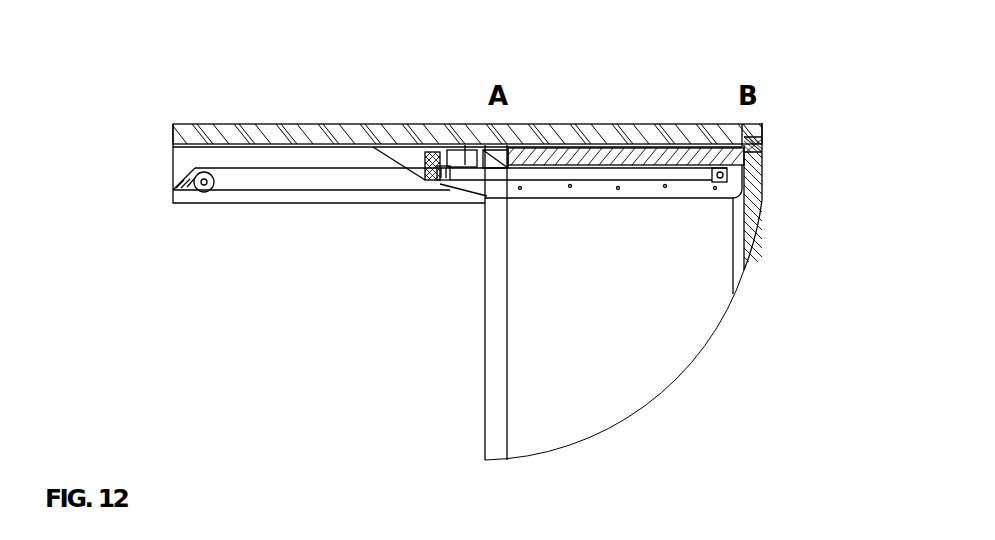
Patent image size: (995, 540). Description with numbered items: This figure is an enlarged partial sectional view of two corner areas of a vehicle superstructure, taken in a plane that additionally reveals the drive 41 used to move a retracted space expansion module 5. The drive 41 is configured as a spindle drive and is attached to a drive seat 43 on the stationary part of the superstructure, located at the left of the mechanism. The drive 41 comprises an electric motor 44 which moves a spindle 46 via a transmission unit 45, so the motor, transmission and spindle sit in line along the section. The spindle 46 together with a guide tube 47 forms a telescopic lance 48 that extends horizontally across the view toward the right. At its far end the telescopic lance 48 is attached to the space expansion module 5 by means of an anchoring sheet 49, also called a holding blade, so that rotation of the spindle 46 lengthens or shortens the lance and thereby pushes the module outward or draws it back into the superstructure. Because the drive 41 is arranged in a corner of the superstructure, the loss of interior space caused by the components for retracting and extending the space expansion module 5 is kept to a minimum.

The space expansion module 5 is at (760, 180).
The drive 41 is at (465, 182).
The drive seat 43 is at (422, 163).
The electric motor 44 is at (472, 152).
The transmission unit 45 is at (427, 178).
The spindle 46 is at (440, 182).
The guide tube 47 is at (583, 170).
The telescopic lance 48 is at (633, 177).
The anchoring sheet 49 is at (730, 168).